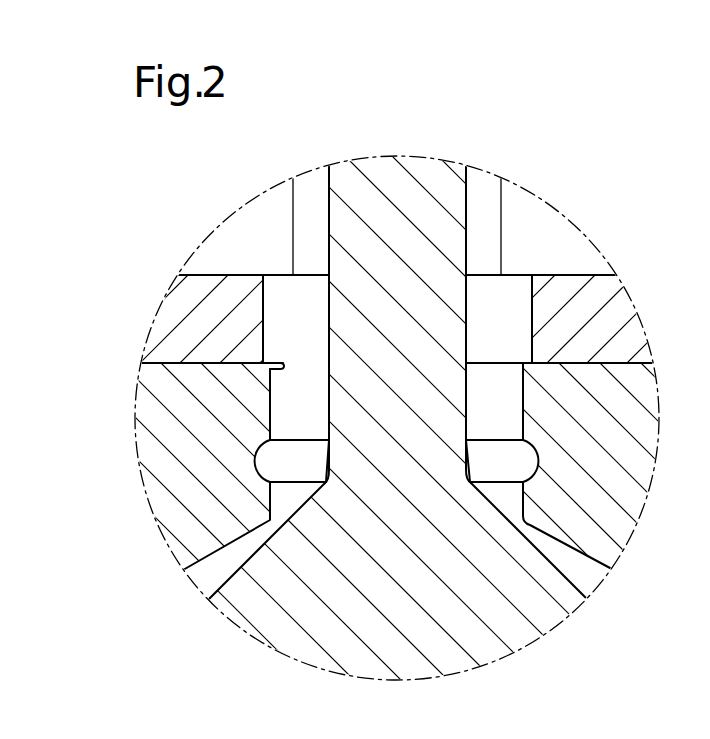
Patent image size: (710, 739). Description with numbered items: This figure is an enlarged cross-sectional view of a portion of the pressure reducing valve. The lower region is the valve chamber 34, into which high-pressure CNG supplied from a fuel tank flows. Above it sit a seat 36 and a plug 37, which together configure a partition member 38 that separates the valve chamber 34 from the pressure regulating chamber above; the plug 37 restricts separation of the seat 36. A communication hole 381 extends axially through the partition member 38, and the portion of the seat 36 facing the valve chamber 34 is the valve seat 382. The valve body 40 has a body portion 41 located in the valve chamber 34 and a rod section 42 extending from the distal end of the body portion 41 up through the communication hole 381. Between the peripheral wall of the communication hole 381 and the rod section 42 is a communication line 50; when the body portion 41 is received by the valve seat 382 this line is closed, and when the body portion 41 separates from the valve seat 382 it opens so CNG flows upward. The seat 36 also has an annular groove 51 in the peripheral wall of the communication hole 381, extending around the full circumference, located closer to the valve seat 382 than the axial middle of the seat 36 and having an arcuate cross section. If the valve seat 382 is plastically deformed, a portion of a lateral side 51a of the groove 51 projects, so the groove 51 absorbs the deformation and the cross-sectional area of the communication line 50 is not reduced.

The valve chamber 34 is at (585, 575).
The seat 36 is at (166, 388).
The plug 37 is at (166, 341).
The partition member 38 is at (93, 325).
The communication hole 381 is at (297, 345).
The valve seat 382 is at (545, 537).
The valve body 40 is at (546, 618).
The body portion 41 is at (495, 653).
The rod section 42 is at (445, 220).
The communication line 50 is at (497, 388).
The annular groove 51 is at (299, 440).
The lateral side 51a is at (262, 462).